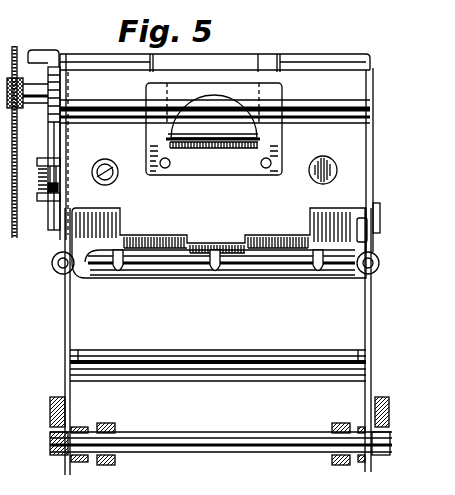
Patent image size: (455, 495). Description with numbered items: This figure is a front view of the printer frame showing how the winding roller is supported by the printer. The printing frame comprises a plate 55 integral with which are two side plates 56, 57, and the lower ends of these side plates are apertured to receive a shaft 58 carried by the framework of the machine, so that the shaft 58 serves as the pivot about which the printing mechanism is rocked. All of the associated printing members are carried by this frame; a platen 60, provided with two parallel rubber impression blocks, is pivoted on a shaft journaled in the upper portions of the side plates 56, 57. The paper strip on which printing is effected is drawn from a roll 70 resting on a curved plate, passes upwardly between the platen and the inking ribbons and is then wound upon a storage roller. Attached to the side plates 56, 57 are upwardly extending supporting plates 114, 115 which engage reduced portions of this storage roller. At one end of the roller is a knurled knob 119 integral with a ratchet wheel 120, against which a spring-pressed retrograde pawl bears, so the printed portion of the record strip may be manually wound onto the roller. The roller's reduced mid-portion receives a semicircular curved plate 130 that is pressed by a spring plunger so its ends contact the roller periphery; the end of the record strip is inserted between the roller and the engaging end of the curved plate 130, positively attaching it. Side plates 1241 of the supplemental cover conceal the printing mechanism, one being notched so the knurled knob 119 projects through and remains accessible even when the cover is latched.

The knurled knob 119 is at (17, 78).
The ratchet wheel 120 is at (55, 91).
The supporting plate 114 is at (64, 147).
The side plate of supplemental cover 1241 is at (14, 226).
The semicircular curved plate 130 is at (214, 133).
The supporting plate 115 is at (375, 165).
The plate 55 is at (219, 240).
The platen 60 is at (261, 266).
The side plate 56 is at (69, 303).
The side plate 57 is at (368, 327).
The paper roll 70 is at (218, 352).
The shaft 58 is at (183, 438).